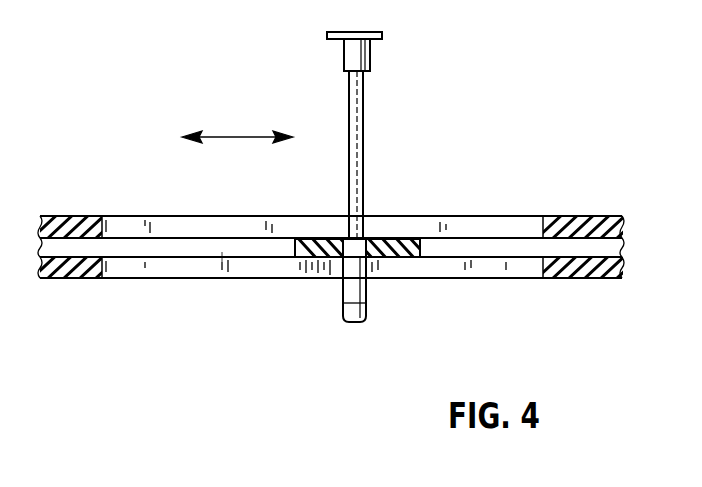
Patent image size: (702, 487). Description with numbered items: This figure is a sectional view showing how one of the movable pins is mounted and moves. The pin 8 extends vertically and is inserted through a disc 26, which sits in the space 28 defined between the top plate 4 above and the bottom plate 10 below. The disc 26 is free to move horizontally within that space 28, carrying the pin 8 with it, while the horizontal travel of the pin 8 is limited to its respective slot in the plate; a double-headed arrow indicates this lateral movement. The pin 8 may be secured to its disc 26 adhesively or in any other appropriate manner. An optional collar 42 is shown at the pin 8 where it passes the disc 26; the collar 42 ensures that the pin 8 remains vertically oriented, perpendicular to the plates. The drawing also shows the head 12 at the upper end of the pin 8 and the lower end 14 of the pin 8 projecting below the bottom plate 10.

The top plate 4 is at (502, 222).
The bottom plate 10 is at (506, 262).
The space 28 is at (222, 252).
The bolt head 12 is at (340, 37).
The pin 8 is at (353, 175).
The disc 26 is at (407, 237).
The collar 42 is at (335, 262).
The bolt end 14 is at (353, 325).